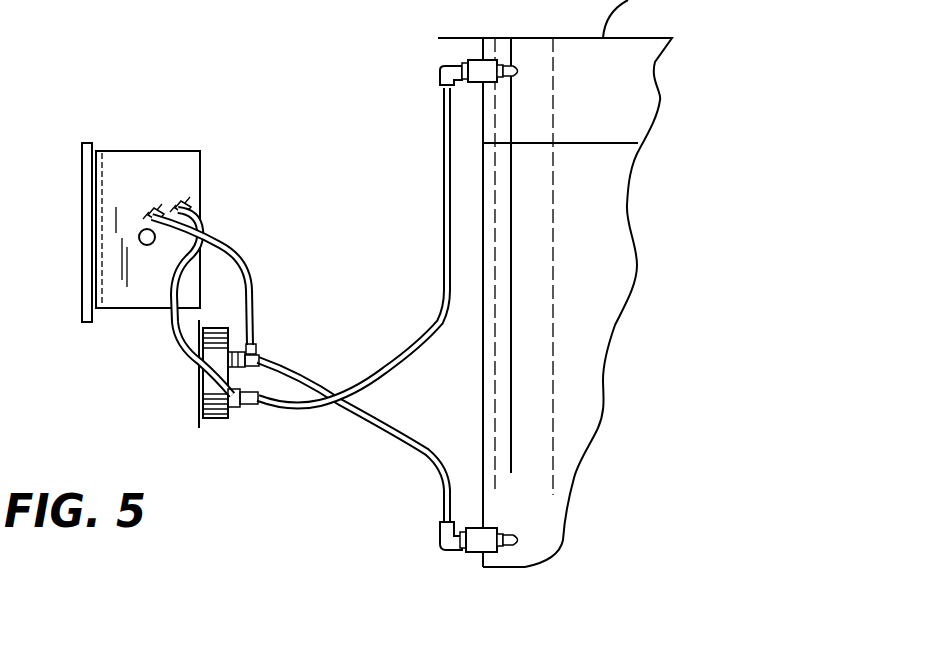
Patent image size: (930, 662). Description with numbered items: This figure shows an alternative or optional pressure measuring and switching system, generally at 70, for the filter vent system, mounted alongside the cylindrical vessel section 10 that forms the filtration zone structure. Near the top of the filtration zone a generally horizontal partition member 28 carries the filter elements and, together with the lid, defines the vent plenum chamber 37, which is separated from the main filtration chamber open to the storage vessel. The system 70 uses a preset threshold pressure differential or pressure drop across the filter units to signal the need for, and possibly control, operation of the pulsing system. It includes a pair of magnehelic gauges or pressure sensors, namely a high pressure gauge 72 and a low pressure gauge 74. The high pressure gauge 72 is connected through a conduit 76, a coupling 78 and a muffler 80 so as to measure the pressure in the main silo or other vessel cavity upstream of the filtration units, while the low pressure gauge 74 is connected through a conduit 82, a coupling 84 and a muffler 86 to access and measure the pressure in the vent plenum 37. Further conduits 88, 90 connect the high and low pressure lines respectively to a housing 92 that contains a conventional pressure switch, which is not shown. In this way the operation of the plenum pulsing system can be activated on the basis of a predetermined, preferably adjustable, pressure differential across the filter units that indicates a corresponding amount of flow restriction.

The cylindrical vessel section 10 is at (676, 240).
The horizontal partition member 28 is at (565, 143).
The vent plenum chamber 37 is at (603, 97).
The pressure measuring and switching system 70 is at (206, 145).
The high pressure gauge 72 is at (233, 353).
The low pressure gauge 74 is at (240, 407).
The conduit 76 is at (385, 440).
The coupling 78 is at (490, 522).
The muffler 80 is at (512, 538).
The conduit 82 is at (440, 173).
The coupling 84 is at (467, 60).
The muffler 86 is at (520, 65).
The conduit 88 is at (170, 320).
The conduit 90 is at (237, 257).
The housing 92 is at (127, 170).